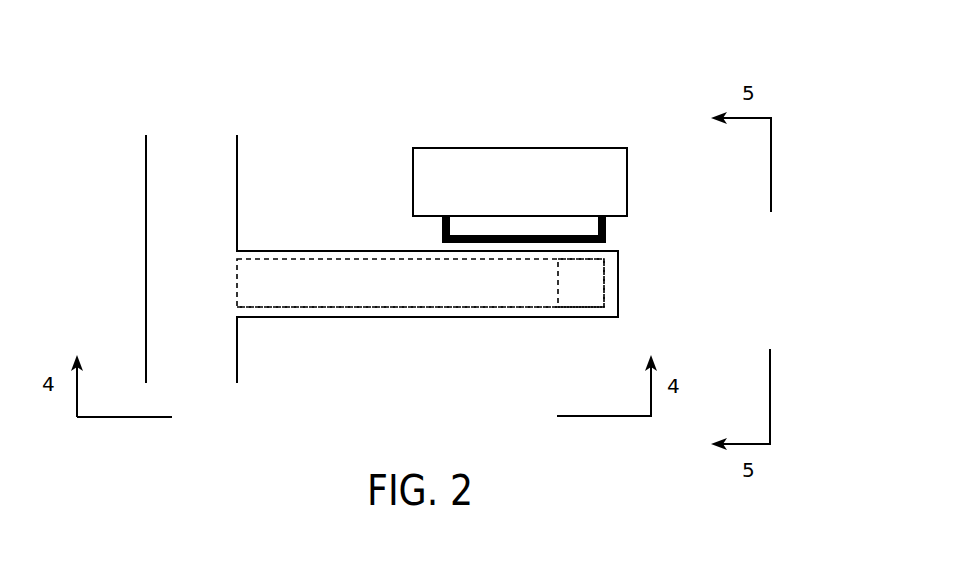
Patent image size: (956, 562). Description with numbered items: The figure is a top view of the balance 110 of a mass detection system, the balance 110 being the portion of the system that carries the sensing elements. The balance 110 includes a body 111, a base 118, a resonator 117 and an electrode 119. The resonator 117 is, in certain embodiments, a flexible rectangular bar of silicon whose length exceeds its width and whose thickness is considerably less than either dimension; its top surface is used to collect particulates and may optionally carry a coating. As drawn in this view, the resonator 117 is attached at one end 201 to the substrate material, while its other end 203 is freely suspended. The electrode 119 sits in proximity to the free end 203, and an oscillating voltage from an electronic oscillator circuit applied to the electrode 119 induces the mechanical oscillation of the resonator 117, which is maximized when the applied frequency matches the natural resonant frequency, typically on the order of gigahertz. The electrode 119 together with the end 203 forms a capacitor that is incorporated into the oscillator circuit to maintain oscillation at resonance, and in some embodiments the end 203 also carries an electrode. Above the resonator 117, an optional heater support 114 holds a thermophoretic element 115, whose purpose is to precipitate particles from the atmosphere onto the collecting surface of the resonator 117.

The balance 110 is at (209, 76).
The body 111 is at (145, 277).
The end 201 is at (247, 250).
The end 203 is at (620, 295).
The base 118 is at (363, 308).
The resonator 117 is at (453, 318).
The electrode 119 is at (580, 305).
The heater support 114 is at (628, 182).
The thermophoretic element 115 is at (607, 230).